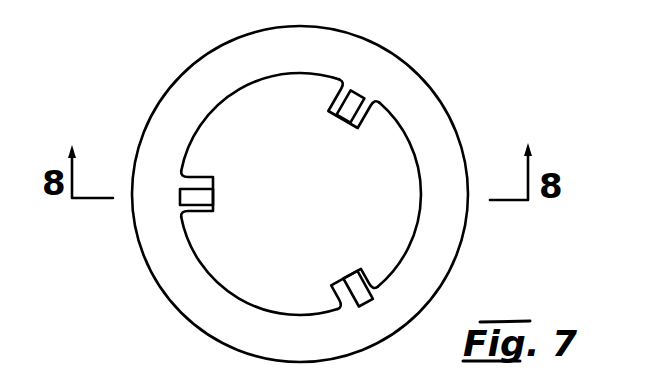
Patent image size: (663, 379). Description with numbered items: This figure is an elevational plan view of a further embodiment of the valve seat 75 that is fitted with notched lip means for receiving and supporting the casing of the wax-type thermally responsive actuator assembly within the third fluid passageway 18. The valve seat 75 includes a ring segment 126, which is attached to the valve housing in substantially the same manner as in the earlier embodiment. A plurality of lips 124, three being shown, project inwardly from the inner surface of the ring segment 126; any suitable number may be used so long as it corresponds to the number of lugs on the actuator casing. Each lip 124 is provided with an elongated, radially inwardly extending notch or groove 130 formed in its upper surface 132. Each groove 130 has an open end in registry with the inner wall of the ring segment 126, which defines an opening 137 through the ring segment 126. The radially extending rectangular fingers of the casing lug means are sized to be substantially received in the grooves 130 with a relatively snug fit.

The valve seat 75 is at (195, 108).
The third fluid passageway 18 is at (360, 150).
The opening 137 is at (370, 172).
The ring segment 126 is at (204, 266).
The lip 124 is at (206, 177).
The upper surface 132 is at (372, 285).
The notch or groove 130 is at (351, 281).